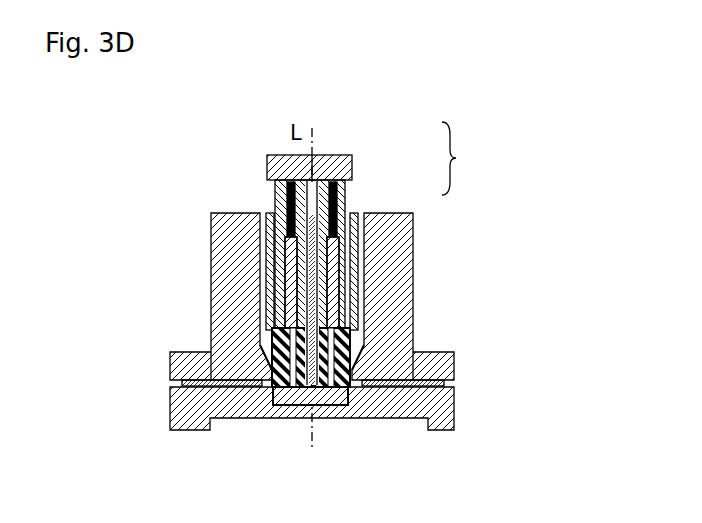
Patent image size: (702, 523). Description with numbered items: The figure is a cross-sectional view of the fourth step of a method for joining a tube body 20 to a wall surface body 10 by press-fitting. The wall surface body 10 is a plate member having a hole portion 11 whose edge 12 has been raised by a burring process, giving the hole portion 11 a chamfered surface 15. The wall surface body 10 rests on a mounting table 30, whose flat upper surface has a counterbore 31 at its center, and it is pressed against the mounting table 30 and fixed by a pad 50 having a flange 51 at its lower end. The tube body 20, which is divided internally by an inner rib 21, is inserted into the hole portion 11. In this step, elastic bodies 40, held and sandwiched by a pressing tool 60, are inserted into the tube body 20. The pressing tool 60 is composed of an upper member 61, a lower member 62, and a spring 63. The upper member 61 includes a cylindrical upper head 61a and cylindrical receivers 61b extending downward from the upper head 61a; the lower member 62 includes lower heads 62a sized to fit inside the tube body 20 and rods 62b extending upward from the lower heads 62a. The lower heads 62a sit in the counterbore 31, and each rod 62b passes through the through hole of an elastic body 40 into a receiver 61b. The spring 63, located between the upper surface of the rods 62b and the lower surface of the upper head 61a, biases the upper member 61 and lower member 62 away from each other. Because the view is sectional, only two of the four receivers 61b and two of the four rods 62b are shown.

The wall surface body 10 is at (170, 372).
The hole portion 11 is at (365, 330).
The edge 12 is at (337, 295).
The chamfered surface 15 is at (250, 381).
The tube body 20 is at (272, 233).
The inner rib 21 is at (306, 264).
The mounting table 30 is at (230, 418).
The counterbore 31 is at (340, 403).
The elastic body 40 is at (268, 345).
The pad 50 is at (412, 228).
The flange 51 is at (443, 367).
The pressing tool 60 is at (328, 303).
The upper member 61 is at (317, 226).
The upper head 61a is at (267, 160).
The receiver 61b is at (275, 200).
The lower member 62 is at (328, 328).
The lower head 62a is at (313, 417).
The rod 62b is at (273, 388).
The spring 63 is at (313, 180).